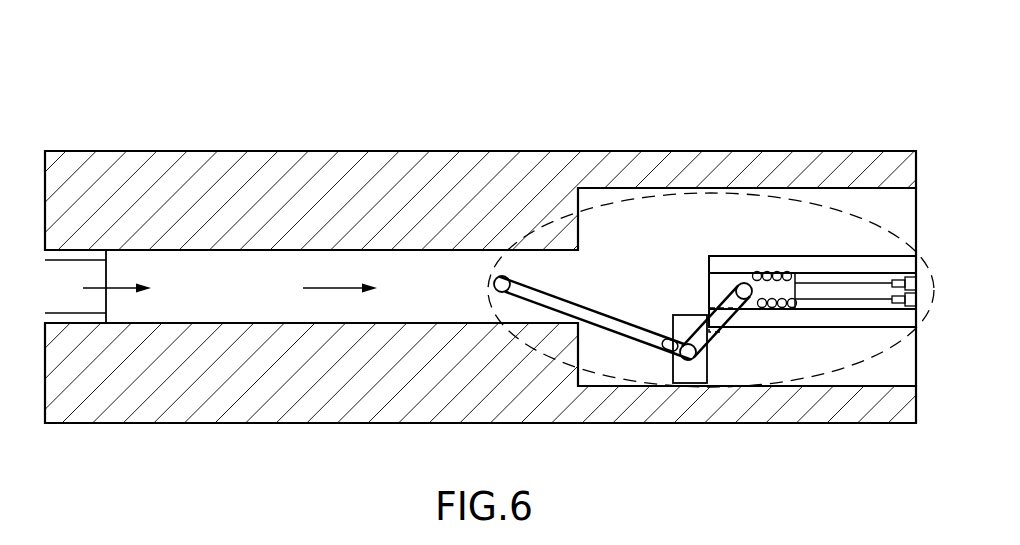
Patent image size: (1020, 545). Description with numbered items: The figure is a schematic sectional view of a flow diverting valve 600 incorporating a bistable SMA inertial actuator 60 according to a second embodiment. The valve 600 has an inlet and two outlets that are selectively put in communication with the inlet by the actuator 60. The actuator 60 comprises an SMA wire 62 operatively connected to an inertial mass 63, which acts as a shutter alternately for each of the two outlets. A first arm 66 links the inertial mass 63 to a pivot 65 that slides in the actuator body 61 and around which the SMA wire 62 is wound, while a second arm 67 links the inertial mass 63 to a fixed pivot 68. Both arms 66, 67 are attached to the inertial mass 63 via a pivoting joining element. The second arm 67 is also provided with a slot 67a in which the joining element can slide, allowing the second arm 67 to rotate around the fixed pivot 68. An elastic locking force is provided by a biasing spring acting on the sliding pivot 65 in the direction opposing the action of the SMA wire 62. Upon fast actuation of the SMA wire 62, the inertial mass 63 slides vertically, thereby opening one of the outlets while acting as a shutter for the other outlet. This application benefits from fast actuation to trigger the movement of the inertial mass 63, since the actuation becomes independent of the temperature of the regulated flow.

The flow diverting valve 600 is at (216, 118).
The bistable SMA inertial actuator 60 is at (759, 176).
The actuator body 61 is at (808, 262).
The SMA wire 62 is at (835, 296).
The inertial mass 63 is at (693, 375).
The pivot 65 is at (740, 283).
The first arm 66 is at (737, 312).
The second arm 67 is at (582, 312).
The slot 67a is at (665, 350).
The fixed pivot 68 is at (488, 288).